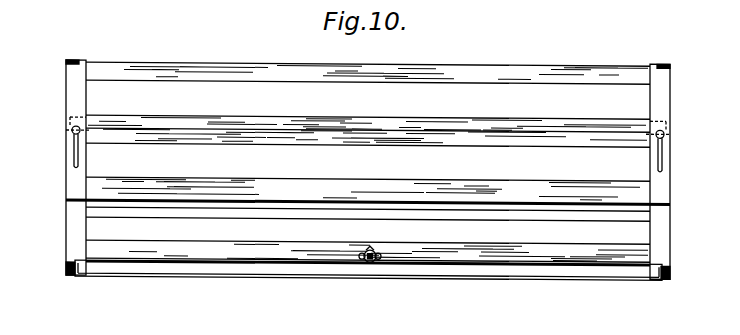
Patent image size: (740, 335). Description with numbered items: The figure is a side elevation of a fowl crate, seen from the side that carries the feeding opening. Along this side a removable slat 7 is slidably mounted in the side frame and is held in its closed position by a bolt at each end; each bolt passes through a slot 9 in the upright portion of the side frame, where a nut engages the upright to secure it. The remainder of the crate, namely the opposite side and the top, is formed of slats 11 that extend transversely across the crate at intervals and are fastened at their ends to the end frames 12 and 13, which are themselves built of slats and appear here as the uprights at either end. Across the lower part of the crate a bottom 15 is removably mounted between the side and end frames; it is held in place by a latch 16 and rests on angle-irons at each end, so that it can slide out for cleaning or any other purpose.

The removable slat 7 is at (473, 128).
The slot 9 is at (663, 167).
The slats 11 is at (553, 78).
The end frame 12 is at (670, 101).
The end frame 13 is at (70, 103).
The bottom 15 is at (265, 274).
The latch 16 is at (380, 262).